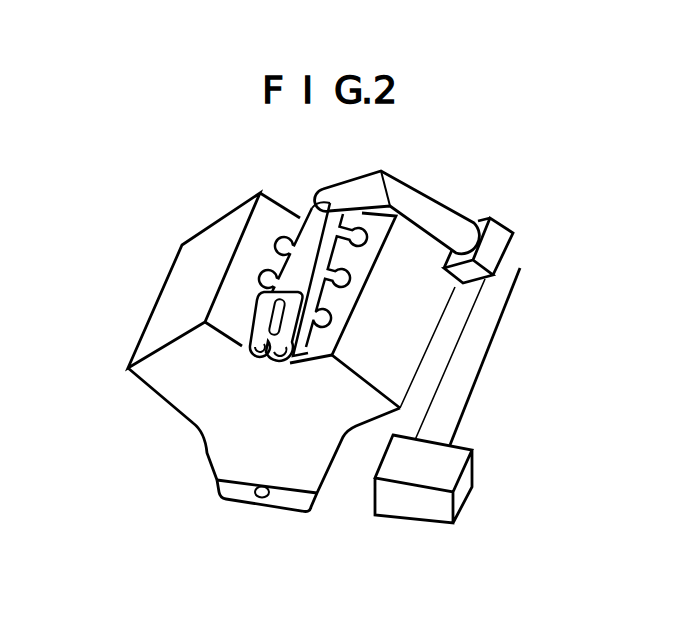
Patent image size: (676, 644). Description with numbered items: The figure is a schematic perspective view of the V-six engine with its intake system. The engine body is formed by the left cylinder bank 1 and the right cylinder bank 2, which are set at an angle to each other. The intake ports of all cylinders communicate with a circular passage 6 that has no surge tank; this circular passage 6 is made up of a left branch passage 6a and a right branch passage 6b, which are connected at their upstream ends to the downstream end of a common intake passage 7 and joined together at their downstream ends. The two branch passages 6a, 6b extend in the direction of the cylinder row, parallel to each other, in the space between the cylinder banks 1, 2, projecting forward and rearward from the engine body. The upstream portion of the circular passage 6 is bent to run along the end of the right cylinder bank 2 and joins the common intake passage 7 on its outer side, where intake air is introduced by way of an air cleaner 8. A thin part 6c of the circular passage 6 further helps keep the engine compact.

The left cylinder bank 1 is at (153, 308).
The right cylinder bank 2 is at (422, 364).
The circular passage 6 is at (430, 184).
The left branch passage 6a is at (312, 208).
The right branch passage 6b is at (342, 227).
The thin part of the circular passage 6c is at (261, 358).
The common intake passage 7 is at (513, 235).
The air cleaner 8 is at (423, 512).